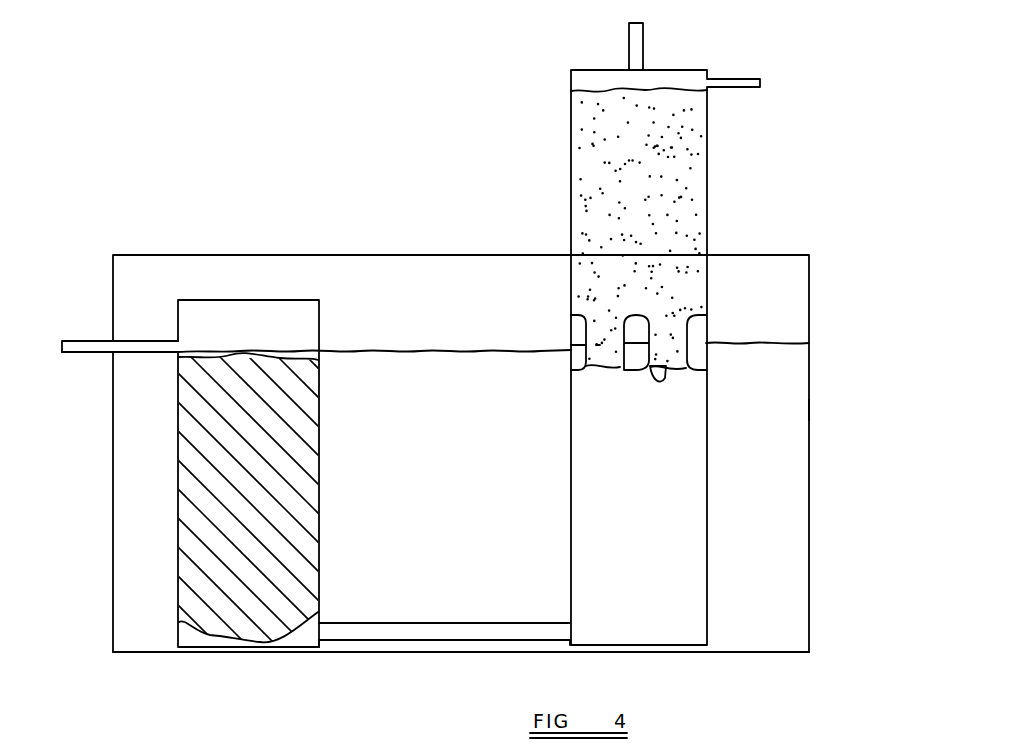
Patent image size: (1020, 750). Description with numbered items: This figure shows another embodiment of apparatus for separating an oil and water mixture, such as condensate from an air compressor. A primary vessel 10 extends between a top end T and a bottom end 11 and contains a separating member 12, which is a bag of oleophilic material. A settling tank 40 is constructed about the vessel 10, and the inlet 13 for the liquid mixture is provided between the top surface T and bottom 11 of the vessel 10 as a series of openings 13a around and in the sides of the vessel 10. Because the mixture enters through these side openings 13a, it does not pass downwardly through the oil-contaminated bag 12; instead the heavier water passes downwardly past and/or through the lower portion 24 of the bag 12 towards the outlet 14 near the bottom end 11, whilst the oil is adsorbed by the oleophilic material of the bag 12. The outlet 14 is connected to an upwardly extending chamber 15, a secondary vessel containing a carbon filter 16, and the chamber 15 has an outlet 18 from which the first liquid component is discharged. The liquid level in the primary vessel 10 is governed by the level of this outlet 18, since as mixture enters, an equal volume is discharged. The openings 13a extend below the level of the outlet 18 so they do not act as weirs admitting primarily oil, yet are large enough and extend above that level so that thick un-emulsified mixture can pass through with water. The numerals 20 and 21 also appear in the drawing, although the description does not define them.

The primary vessel 10 is at (718, 67).
The bottom end 11 is at (653, 654).
The separating member 12 is at (665, 183).
The inlet 13 is at (568, 330).
The openings 13a is at (627, 372).
The outlet 14 is at (447, 633).
The upwardly extending chamber 15 is at (264, 297).
The filter 16 is at (222, 547).
The outlet 18 is at (63, 353).
The liquid space 20 is at (690, 548).
The right sink 21 is at (656, 370).
The lower portion 24 is at (666, 338).
The settling tank 40 is at (822, 502).
The top end T is at (677, 70).